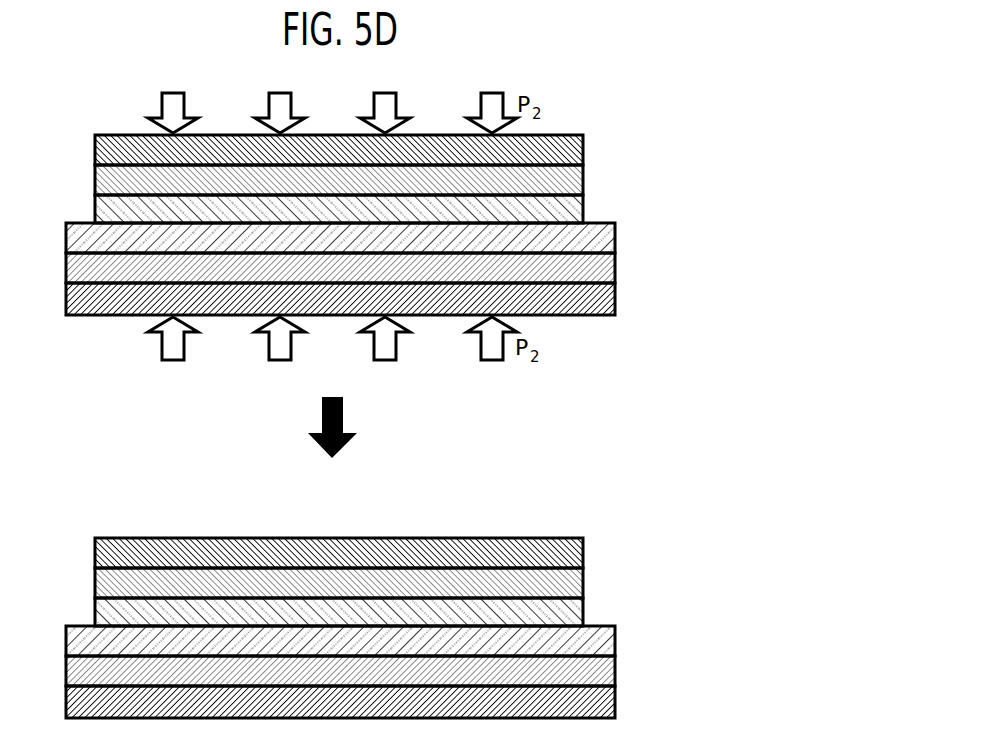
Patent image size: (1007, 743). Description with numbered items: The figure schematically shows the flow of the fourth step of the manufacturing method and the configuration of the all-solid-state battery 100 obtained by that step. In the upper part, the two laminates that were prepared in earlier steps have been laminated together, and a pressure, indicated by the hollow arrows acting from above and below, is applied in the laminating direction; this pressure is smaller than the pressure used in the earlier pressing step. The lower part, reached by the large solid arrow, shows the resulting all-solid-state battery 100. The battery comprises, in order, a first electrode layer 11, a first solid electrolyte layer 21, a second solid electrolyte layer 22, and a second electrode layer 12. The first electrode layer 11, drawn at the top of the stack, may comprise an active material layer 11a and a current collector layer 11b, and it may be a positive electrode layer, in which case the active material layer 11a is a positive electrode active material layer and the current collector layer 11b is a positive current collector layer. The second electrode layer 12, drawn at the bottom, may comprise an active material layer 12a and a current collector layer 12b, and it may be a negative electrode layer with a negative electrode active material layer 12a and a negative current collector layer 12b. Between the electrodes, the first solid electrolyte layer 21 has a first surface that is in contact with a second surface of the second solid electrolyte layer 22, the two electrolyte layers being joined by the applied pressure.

The all-solid-state battery 100 is at (354, 508).
The first electrode layer 11 is at (424, 366).
The active material layer 11a is at (583, 180).
The current collector layer 11b is at (583, 148).
The second electrode layer 12 is at (424, 485).
The active material layer 12a is at (615, 297).
The current collector layer 12b is at (615, 268).
The first solid electrolyte layer 21 is at (583, 208).
The second solid electrolyte layer 22 is at (615, 238).